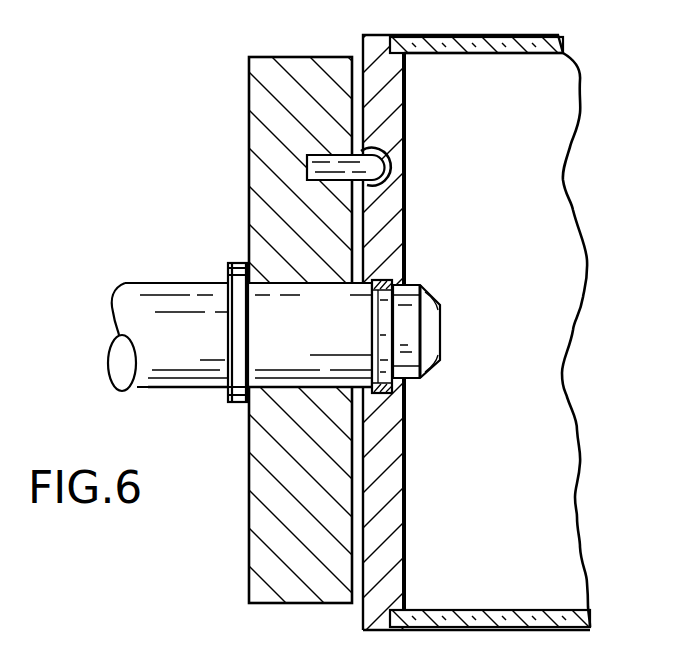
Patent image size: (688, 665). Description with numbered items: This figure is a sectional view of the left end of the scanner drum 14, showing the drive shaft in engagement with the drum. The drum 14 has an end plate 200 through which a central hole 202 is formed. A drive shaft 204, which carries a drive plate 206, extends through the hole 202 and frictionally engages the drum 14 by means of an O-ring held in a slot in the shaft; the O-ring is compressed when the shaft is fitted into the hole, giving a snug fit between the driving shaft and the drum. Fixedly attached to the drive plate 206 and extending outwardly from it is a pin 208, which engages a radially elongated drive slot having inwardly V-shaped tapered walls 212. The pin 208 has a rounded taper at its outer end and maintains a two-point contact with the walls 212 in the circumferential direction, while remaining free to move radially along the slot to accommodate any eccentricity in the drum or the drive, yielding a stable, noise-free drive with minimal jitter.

The drum 14 is at (428, 35).
The end plate 200 is at (393, 212).
The central hole 202 is at (423, 378).
The drive shaft 204 is at (438, 318).
The drive plate 206 is at (262, 204).
The pin 208 is at (307, 163).
The V-shaped tapered walls 212 is at (367, 157).